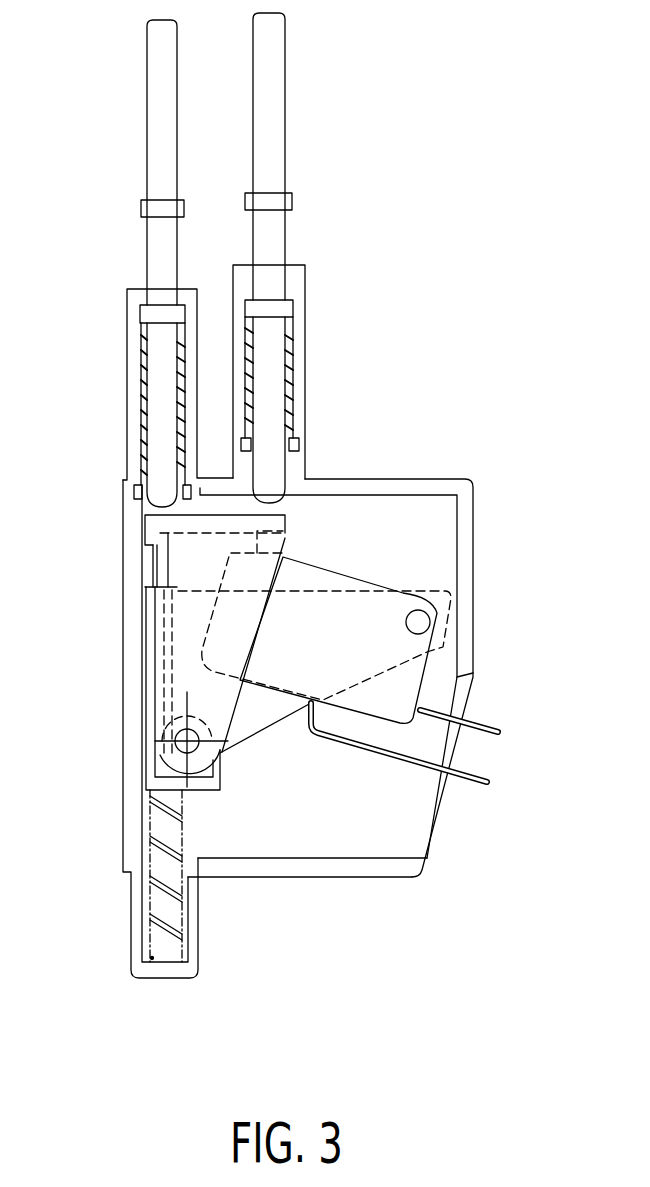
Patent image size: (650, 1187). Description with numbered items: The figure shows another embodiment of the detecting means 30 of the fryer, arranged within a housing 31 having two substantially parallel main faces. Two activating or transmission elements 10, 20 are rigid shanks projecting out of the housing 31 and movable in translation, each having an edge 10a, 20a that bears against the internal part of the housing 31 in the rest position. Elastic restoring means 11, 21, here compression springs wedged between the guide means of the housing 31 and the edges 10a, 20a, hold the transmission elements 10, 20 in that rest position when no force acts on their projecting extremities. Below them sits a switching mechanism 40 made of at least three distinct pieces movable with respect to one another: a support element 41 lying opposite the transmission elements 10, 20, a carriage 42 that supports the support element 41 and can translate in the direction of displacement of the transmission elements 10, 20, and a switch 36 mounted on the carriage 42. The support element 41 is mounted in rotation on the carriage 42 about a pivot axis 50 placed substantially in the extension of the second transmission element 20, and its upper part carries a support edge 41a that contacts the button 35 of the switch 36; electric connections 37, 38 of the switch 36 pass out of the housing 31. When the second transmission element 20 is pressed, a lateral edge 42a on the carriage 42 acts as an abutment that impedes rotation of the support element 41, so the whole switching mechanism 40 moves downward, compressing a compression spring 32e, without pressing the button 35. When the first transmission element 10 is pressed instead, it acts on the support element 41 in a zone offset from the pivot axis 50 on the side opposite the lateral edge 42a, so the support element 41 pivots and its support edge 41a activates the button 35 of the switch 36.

The transmission element 10 is at (272, 83).
The edge 10a is at (292, 202).
The elastic restoring means 11 is at (293, 380).
The second transmission element 20 is at (157, 90).
The edge 20a is at (142, 203).
The elastic restoring means 21 is at (140, 395).
The detecting means 30 is at (423, 890).
The housing 31 is at (300, 868).
The compression spring 32e is at (147, 900).
The button 35 is at (287, 540).
The switch 36 is at (403, 678).
The electric connection 37 is at (482, 784).
The electric connection 38 is at (497, 730).
The switching mechanism 40 is at (361, 571).
The support element 41 is at (173, 564).
The support edge 41a is at (207, 527).
The carriage 42 is at (255, 714).
The lateral edge 42a is at (157, 663).
The pivot axis 50 is at (180, 752).